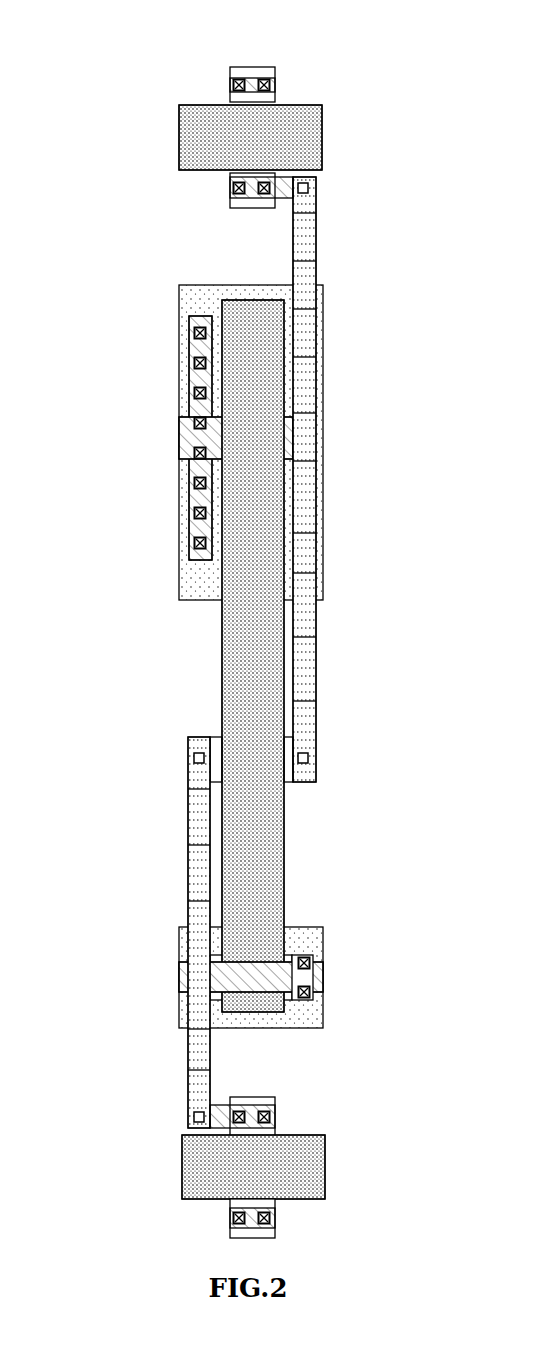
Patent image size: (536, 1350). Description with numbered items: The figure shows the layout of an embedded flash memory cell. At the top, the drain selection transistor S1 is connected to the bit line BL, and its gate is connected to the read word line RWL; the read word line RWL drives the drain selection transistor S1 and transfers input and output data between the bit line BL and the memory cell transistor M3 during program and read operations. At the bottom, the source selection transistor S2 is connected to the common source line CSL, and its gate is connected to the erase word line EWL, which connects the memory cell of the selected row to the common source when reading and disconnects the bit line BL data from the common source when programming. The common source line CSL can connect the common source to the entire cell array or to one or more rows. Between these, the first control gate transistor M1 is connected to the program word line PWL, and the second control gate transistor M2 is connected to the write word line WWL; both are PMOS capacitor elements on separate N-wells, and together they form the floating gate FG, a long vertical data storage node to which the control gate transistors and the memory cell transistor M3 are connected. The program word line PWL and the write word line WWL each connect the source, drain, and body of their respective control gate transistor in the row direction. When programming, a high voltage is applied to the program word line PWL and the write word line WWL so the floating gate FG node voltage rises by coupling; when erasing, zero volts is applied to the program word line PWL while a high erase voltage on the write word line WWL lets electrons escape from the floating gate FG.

The bit line BL is at (250, 78).
The read word line RWL is at (178, 138).
The drain selection transistor S1 is at (343, 137).
The first control gate transistor M1 is at (343, 437).
The program word line PWL is at (178, 452).
The floating gate FG is at (223, 672).
The memory cell transistor M3 is at (343, 763).
The second control gate transistor M2 is at (343, 962).
The write word line WWL is at (188, 982).
The source selection transistor S2 is at (343, 1153).
The erase word line EWL is at (182, 1170).
The common source line CSL is at (232, 1218).